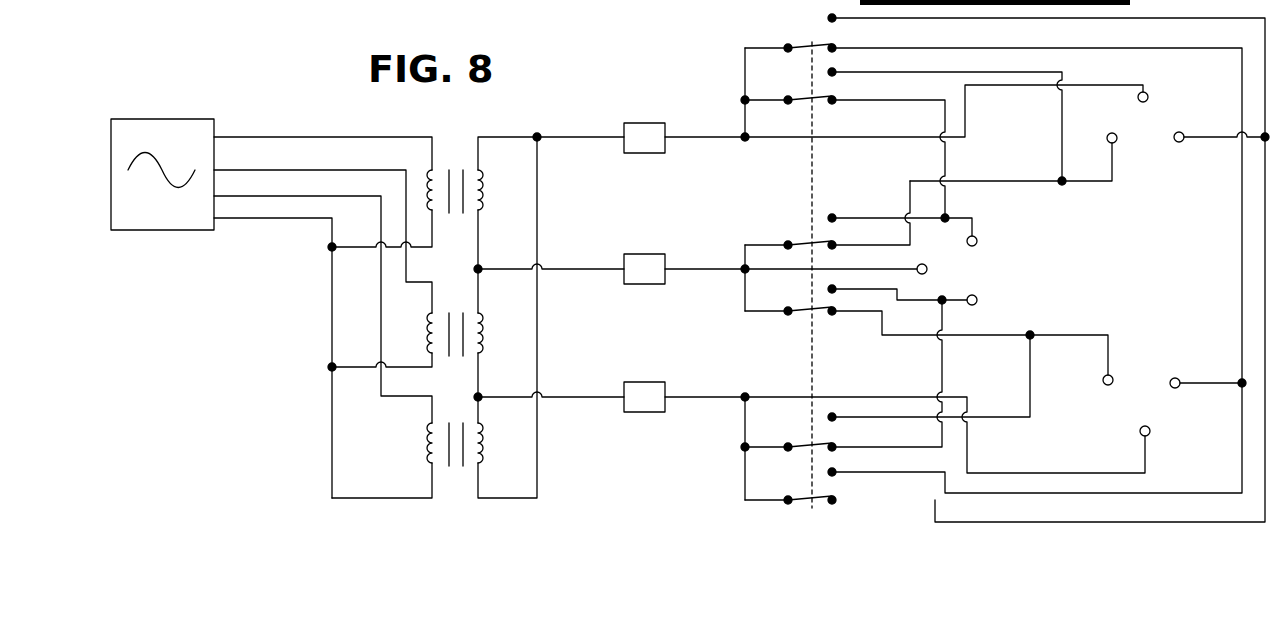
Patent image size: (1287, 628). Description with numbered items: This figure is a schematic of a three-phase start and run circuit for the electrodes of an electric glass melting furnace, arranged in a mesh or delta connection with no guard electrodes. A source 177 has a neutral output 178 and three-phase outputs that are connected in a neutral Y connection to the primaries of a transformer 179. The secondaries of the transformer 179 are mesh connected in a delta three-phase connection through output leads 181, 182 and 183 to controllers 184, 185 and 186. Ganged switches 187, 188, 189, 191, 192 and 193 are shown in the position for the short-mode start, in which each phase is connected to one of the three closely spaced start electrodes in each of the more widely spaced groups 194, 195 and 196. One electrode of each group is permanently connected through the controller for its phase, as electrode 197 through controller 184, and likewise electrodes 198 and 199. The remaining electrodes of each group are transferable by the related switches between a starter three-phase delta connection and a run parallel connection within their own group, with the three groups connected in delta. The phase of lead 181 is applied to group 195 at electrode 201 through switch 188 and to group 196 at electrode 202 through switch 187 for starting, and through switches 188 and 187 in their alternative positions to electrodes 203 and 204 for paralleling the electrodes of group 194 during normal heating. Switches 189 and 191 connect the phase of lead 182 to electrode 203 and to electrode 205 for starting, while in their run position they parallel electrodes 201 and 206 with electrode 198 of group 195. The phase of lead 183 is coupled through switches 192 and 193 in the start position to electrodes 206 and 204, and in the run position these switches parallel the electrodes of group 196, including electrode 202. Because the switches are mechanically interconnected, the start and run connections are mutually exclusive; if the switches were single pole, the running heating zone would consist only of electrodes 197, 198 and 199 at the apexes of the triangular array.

The source 177 is at (214, 131).
The neutral output 178 is at (316, 222).
The transformer 179 is at (455, 147).
The output lead 181 is at (497, 137).
The output lead 182 is at (489, 269).
The output lead 183 is at (485, 397).
The controller 184 is at (641, 124).
The controller 185 is at (641, 255).
The controller 186 is at (641, 383).
The ganged switch 187 is at (809, 44).
The ganged switch 188 is at (800, 97).
The ganged switch 189 is at (795, 243).
The ganged switch 191 is at (795, 309).
The ganged switch 192 is at (800, 445).
The ganged switch 193 is at (800, 498).
The electrode group 194 is at (1158, 136).
The electrode group 195 is at (976, 278).
The electrode group 196 is at (1158, 415).
The electrode 197 is at (1148, 94).
The electrode 198 is at (932, 259).
The electrode 199 is at (1150, 434).
The electrode 201 is at (977, 239).
The electrode 202 is at (1183, 373).
The electrode 203 is at (1107, 138).
The electrode 204 is at (1182, 131).
The electrode 205 is at (1104, 385).
The electrode 206 is at (977, 298).